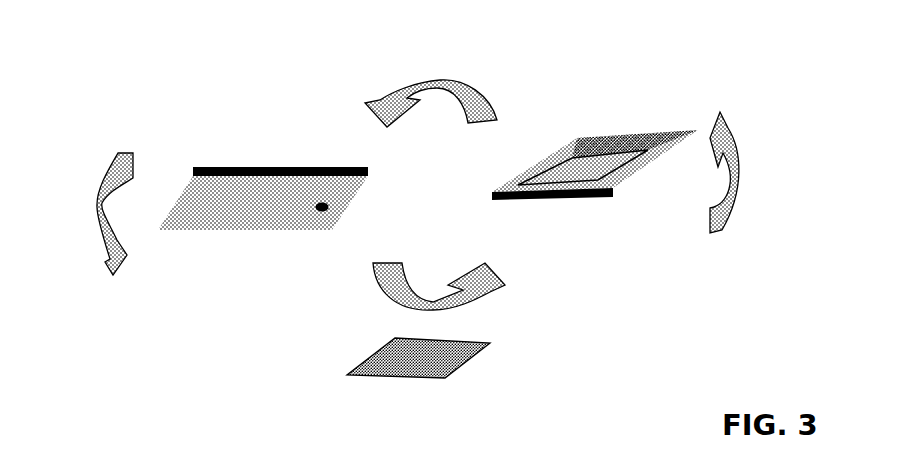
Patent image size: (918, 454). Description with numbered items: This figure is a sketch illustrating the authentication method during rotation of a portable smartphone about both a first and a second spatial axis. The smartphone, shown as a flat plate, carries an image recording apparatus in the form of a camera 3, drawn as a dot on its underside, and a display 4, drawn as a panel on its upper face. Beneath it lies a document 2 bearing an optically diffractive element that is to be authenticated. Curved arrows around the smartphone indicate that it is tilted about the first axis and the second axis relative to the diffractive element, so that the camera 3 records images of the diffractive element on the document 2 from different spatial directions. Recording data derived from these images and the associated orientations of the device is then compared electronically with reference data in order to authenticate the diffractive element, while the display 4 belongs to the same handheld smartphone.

The document 2 is at (447, 358).
The camera 3 is at (318, 209).
The display 4 is at (577, 160).